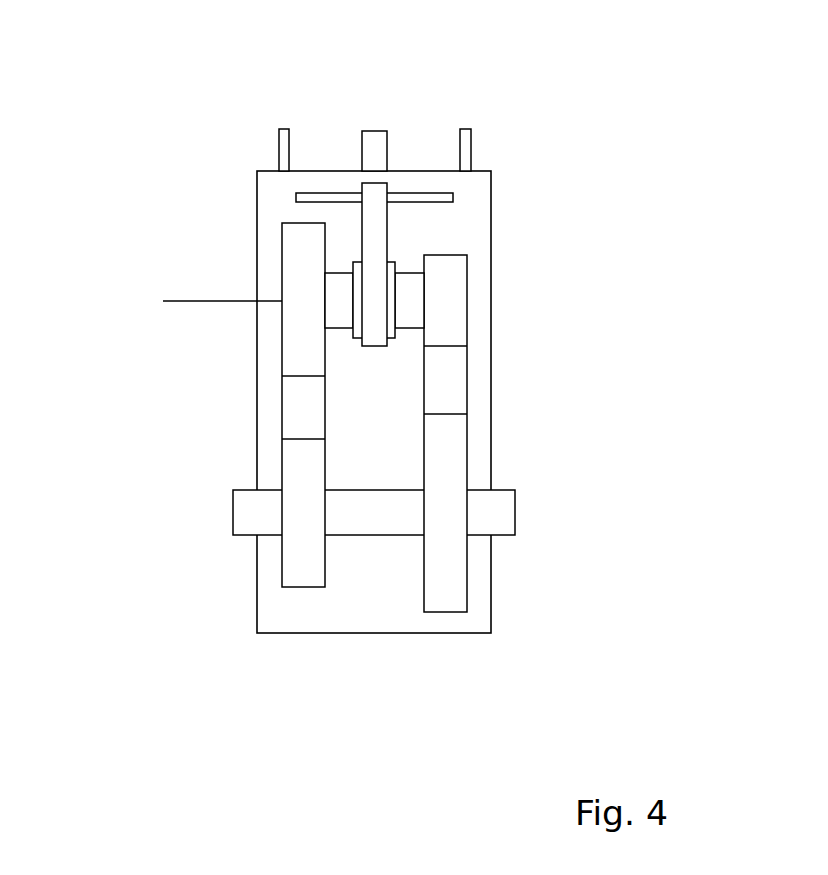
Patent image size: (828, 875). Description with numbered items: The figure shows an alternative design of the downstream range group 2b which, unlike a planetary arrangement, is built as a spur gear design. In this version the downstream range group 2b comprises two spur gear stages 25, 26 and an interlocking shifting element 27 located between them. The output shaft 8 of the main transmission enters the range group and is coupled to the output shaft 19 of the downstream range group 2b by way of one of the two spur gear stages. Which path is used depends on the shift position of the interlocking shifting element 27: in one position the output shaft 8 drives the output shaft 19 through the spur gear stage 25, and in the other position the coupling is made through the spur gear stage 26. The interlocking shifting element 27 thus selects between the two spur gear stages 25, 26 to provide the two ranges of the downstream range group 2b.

The downstream range group 2b is at (590, 172).
The output shaft of the main transmission 8 is at (208, 301).
The output shaft of the downstream range group 19 is at (255, 517).
The spur gear stage 25 is at (303, 656).
The spur gear stage 26 is at (445, 656).
The interlocking shifting element 27 is at (437, 224).